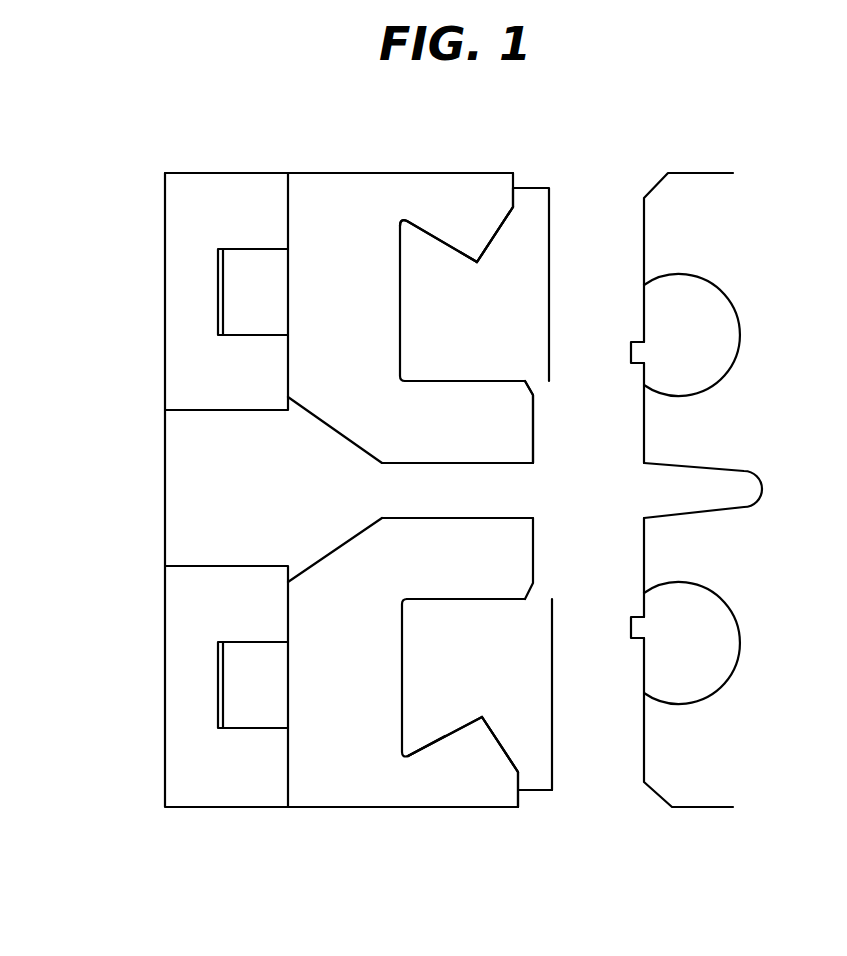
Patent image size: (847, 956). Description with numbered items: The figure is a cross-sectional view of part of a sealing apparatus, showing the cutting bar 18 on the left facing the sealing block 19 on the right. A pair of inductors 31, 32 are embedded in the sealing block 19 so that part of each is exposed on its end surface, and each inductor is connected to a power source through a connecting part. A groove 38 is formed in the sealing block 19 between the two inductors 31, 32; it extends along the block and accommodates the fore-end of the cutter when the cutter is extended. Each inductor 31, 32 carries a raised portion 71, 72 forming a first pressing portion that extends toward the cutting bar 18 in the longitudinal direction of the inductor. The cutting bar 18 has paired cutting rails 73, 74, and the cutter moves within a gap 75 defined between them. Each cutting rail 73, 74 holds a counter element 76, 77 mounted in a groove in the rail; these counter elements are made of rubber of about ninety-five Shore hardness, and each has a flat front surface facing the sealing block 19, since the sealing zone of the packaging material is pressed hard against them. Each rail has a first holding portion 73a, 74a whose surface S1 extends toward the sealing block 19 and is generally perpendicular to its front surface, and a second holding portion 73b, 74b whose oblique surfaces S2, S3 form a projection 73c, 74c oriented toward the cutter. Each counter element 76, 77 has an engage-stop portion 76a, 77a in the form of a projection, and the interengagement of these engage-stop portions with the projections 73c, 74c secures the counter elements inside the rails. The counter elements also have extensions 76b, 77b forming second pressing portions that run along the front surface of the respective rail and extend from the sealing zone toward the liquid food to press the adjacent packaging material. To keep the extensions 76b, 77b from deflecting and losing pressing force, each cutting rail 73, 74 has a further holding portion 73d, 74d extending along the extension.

The cutting bar 18 is at (394, 150).
The sealing block 19 is at (712, 188).
The inductor 31 is at (728, 323).
The inductor 32 is at (737, 655).
The groove 38 is at (742, 487).
The raised portion 71 is at (640, 352).
The raised portion 72 is at (640, 628).
The cutting rail 73 is at (415, 175).
The first holding portion 73a is at (515, 427).
The second holding portion 73b is at (500, 165).
The projection 73c is at (473, 243).
The holding portion 73d is at (502, 230).
The cutting rail 74 is at (375, 800).
The first holding portion 74a is at (520, 553).
The second holding portion 74b is at (490, 818).
The projection 74c is at (487, 750).
The holding portion 74d is at (543, 778).
The gap 75 is at (505, 500).
The counter element 76 is at (425, 317).
The engage-stop portion 76a is at (408, 233).
The extension 76b is at (540, 195).
The counter element 77 is at (420, 642).
The engage-stop portion 77a is at (410, 748).
The extension 77b is at (505, 797).
The surface S1 is at (457, 381).
The oblique surface S2 is at (433, 237).
The oblique surface S3 is at (497, 237).